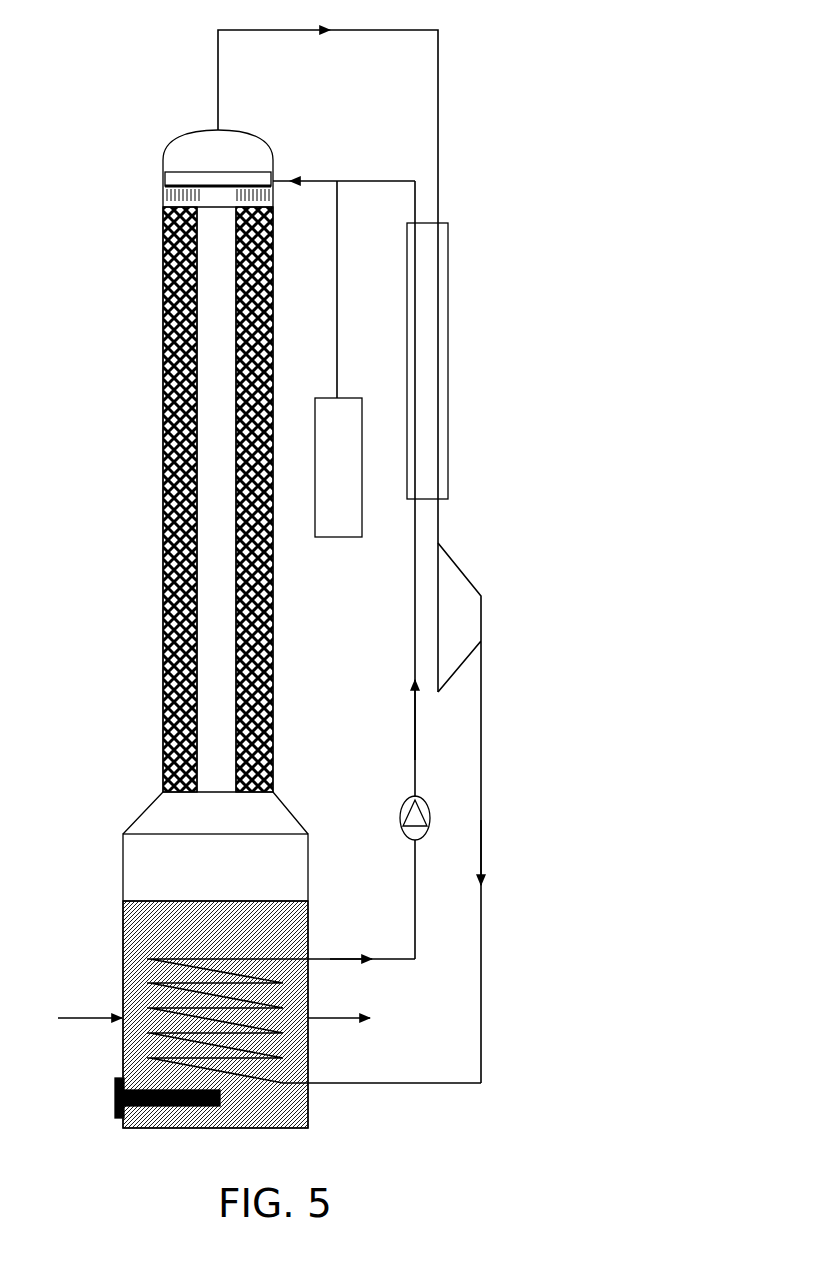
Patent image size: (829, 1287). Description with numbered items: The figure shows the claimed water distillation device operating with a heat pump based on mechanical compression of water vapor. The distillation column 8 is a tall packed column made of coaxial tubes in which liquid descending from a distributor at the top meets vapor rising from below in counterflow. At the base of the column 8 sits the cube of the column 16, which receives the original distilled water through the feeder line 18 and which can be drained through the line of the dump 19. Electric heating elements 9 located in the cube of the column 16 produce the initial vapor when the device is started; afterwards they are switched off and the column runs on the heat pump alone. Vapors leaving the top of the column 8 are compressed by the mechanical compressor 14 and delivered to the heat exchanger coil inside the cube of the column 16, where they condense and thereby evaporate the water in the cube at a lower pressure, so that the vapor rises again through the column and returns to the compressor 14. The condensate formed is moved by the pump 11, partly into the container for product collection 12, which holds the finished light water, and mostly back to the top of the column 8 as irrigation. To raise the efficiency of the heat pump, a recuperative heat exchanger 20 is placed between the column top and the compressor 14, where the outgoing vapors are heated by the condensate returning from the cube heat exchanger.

The distillation column 8 is at (163, 447).
The electric heating elements 9 is at (116, 1103).
The pump 11 is at (403, 805).
The container for product collection 12 is at (362, 468).
The compressor 14 is at (460, 568).
The cube of the column 16 is at (121, 938).
The feeder line 18 is at (90, 997).
The line of the dump 19 is at (355, 1008).
The recuperative heat exchanger 20 is at (447, 307).